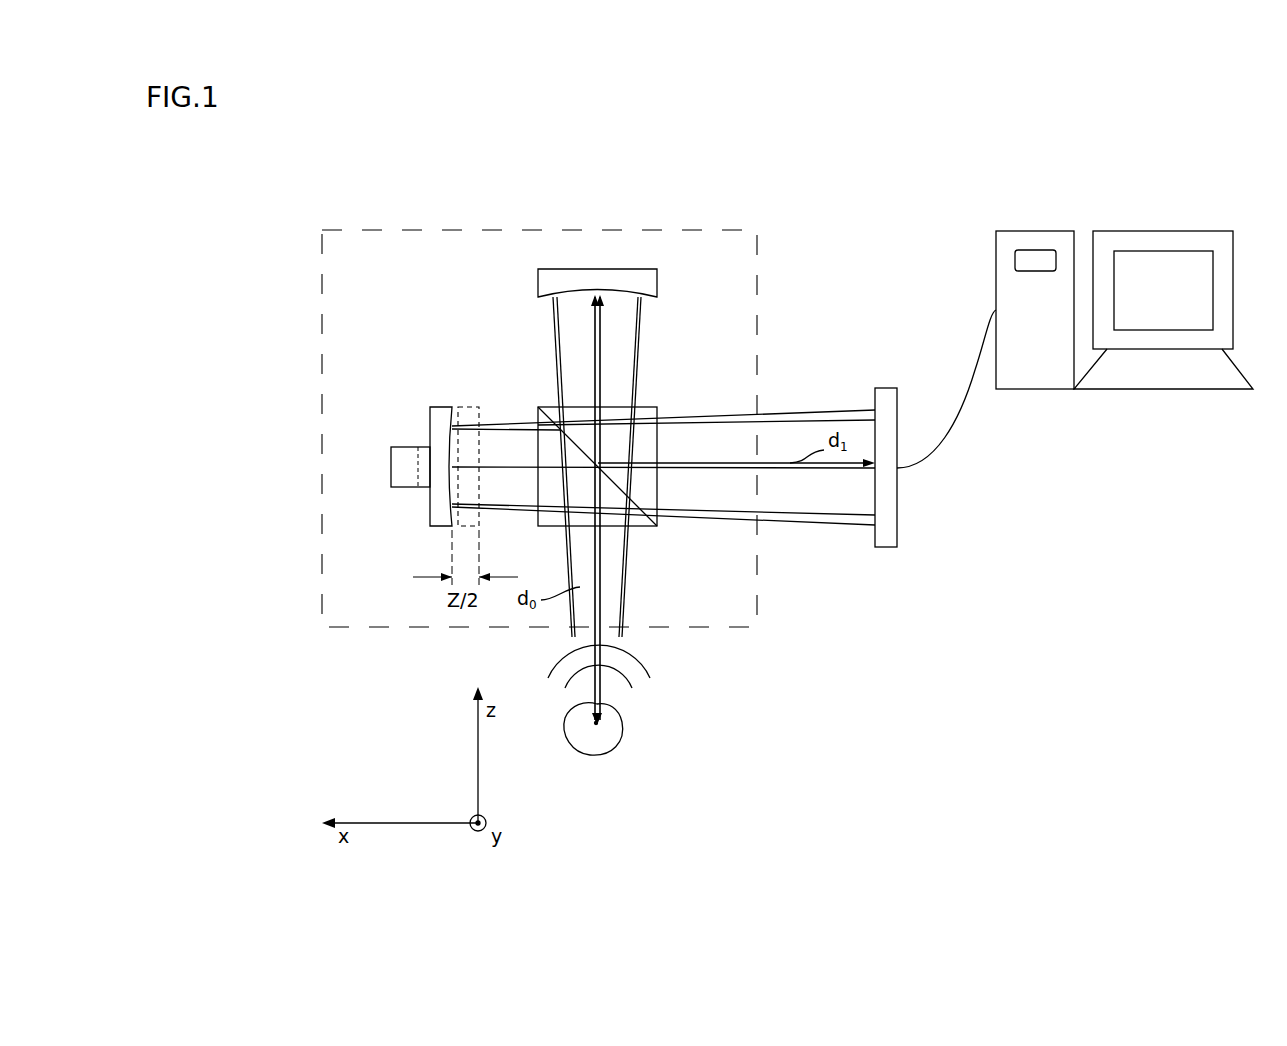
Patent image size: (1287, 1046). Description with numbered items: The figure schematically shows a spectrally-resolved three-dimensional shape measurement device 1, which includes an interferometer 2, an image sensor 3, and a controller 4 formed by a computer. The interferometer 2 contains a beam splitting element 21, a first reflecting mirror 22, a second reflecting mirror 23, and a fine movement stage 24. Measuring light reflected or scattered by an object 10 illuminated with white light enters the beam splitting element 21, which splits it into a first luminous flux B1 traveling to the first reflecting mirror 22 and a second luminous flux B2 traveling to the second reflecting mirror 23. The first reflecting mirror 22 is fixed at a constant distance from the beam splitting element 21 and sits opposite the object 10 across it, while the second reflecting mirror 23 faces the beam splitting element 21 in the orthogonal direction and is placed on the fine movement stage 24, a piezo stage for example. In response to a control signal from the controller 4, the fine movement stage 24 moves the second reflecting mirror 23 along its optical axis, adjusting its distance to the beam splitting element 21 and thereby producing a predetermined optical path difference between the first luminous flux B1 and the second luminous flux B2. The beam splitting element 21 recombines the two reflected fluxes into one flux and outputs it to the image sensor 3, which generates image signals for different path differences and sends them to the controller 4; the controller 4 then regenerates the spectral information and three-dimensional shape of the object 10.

The spectrally-resolved three-dimensional shape measurement device 1 is at (1160, 690).
The interferometer 2 is at (370, 230).
The image sensor 3 is at (897, 507).
The controller 4 is at (1050, 389).
The object 10 is at (600, 757).
The beam splitting element 21 is at (650, 528).
The first reflecting mirror 22 is at (657, 288).
The second reflecting mirror 23 is at (437, 405).
The fine movement stage 24 is at (400, 446).
The first luminous flux B1 is at (640, 372).
The second luminous flux B2 is at (512, 424).